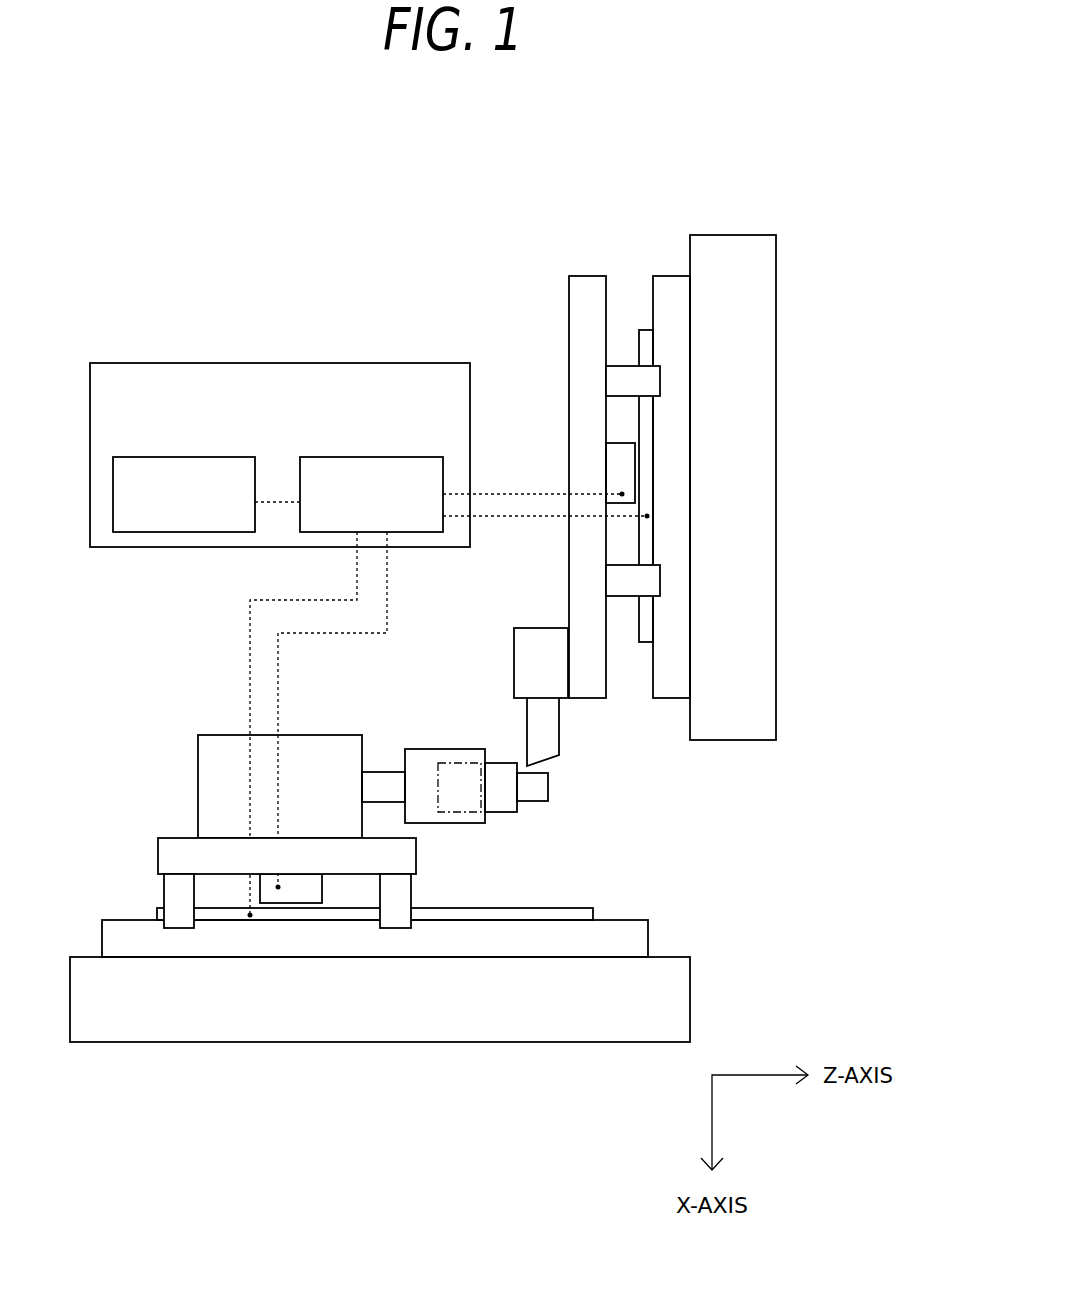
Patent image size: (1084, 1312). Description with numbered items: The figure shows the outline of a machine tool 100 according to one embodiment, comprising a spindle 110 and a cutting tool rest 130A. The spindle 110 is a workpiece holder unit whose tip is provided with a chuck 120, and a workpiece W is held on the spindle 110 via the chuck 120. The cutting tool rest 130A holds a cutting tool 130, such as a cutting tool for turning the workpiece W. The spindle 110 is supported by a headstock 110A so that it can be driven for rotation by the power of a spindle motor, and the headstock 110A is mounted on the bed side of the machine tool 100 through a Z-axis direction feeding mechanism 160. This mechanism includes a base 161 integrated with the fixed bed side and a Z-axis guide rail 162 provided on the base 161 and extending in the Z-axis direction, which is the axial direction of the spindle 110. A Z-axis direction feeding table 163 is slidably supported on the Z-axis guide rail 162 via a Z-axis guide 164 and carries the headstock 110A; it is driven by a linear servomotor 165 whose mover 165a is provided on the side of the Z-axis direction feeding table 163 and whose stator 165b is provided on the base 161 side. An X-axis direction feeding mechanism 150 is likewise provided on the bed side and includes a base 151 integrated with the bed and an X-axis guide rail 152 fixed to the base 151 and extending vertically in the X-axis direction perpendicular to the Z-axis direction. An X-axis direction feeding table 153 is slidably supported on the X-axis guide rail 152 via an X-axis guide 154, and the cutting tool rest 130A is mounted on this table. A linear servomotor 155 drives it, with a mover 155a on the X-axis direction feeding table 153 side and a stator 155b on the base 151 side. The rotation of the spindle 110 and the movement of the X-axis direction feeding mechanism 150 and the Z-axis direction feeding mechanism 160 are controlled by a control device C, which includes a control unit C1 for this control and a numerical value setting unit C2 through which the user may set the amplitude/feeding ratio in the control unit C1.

The machine tool 100 is at (207, 260).
The control device C is at (283, 363).
The control unit C1 is at (378, 457).
The numerical value setting unit C2 is at (183, 457).
The spindle 110 is at (387, 782).
The headstock 110A is at (220, 765).
The chuck 120 is at (445, 755).
The workpiece W is at (535, 785).
The cutting tool 130 is at (540, 738).
The cutting tool rest 130A is at (538, 650).
The X-axis direction feeding mechanism 150 is at (737, 152).
The base 151 is at (750, 247).
The X-axis guide rail 152 is at (668, 290).
The X-axis direction feeding table 153 is at (573, 355).
The X-axis guide 154 is at (600, 378).
The linear servomotor 155 is at (767, 466).
The mover 155a is at (622, 453).
The stator 155b is at (647, 478).
The Z-axis direction feeding mechanism 160 is at (147, 1095).
The base 161 is at (532, 1020).
The Z-axis guide rail 162 is at (640, 942).
The Z-axis direction feeding table 163 is at (183, 847).
The Z-axis guide 164 is at (178, 898).
The linear servomotor 165 is at (375, 1011).
The mover 165a is at (303, 893).
The stator 165b is at (358, 915).